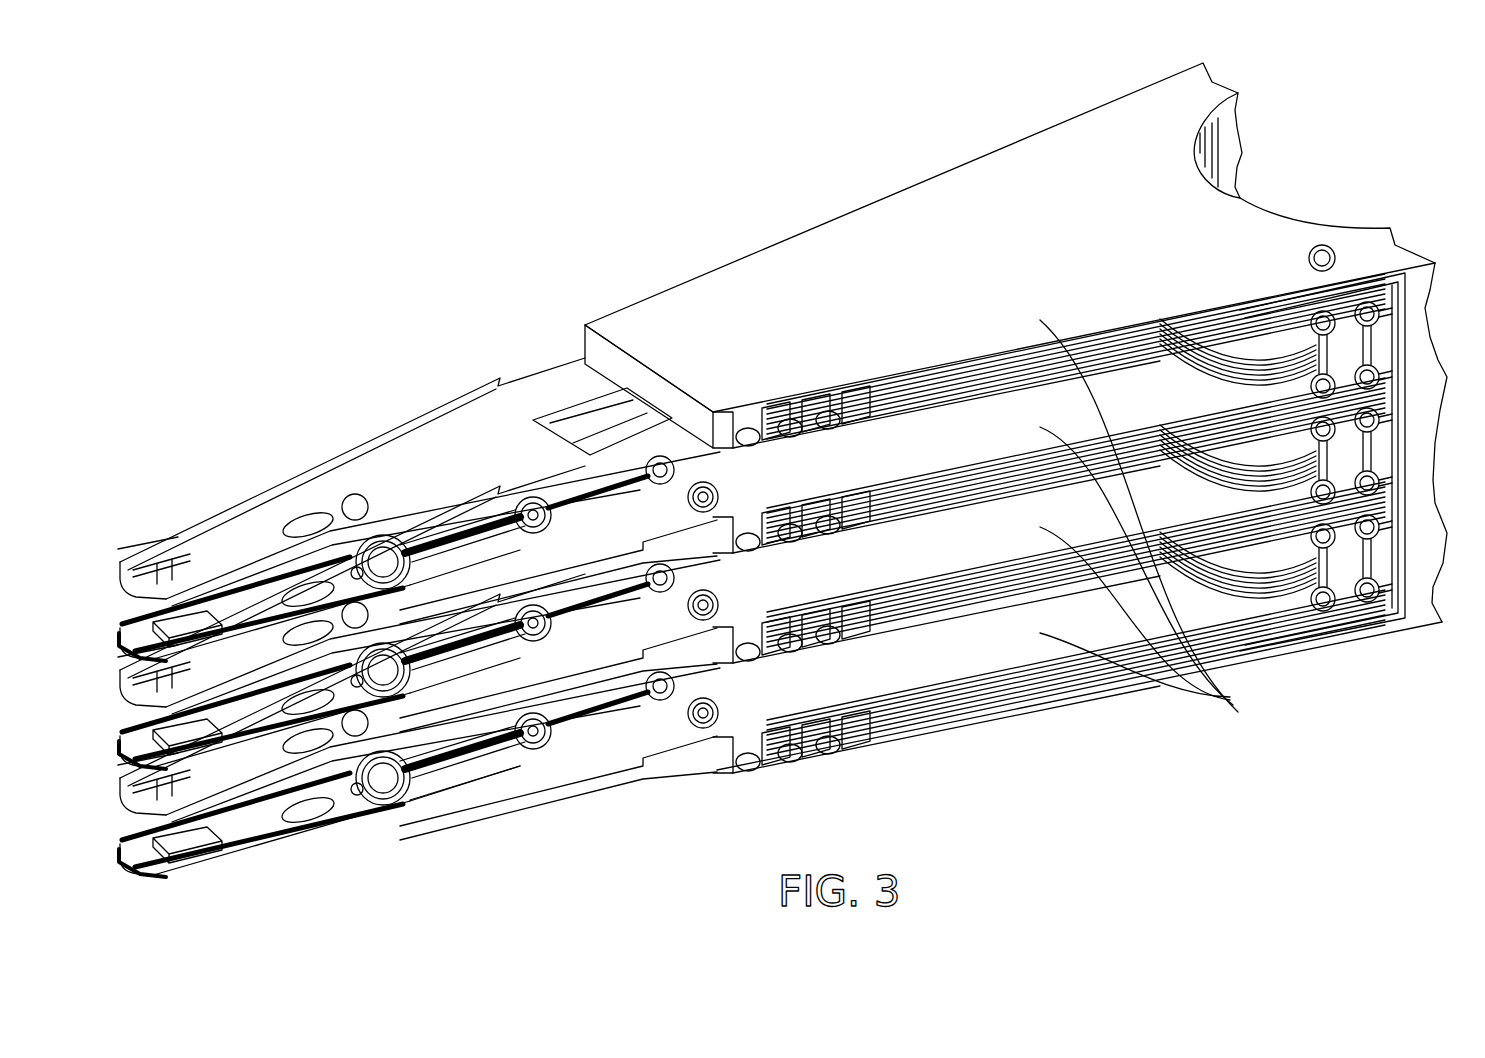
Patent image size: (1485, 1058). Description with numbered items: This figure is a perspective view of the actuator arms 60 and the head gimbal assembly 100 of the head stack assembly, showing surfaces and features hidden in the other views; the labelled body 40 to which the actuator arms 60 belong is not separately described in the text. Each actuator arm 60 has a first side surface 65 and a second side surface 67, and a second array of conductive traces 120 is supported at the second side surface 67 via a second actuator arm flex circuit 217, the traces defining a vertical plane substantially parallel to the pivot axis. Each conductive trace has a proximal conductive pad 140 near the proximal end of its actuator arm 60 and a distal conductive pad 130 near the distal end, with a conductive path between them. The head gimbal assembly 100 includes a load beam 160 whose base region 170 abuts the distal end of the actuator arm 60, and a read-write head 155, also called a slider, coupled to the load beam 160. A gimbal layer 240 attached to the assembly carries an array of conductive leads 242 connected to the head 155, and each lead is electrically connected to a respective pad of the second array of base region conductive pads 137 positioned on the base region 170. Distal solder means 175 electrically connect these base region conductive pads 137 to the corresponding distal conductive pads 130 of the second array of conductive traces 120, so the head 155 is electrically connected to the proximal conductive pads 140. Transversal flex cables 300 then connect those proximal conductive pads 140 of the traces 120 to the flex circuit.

The actuator body 40 is at (1222, 84).
The first side surface 65 is at (838, 203).
The head gimbal assembly 100 is at (340, 405).
The load beam 160 is at (441, 405).
The base region 170 is at (556, 348).
The second array of base region conductive pads 137 is at (726, 432).
The distal conductive pad 130 is at (790, 412).
The distal solder means 175 is at (830, 415).
The second array of conductive traces 120 is at (950, 378).
The second actuator arm flex circuit 217 is at (1126, 332).
The proximal conductive pad 140 is at (1408, 311).
The transversal flex cables 300 is at (1205, 376).
The actuator arms 60 is at (1158, 524).
The second side surface 67 is at (930, 722).
The gimbal layer 240 is at (600, 722).
The array of conductive leads 242 is at (560, 748).
The read-write head 155 is at (195, 840).